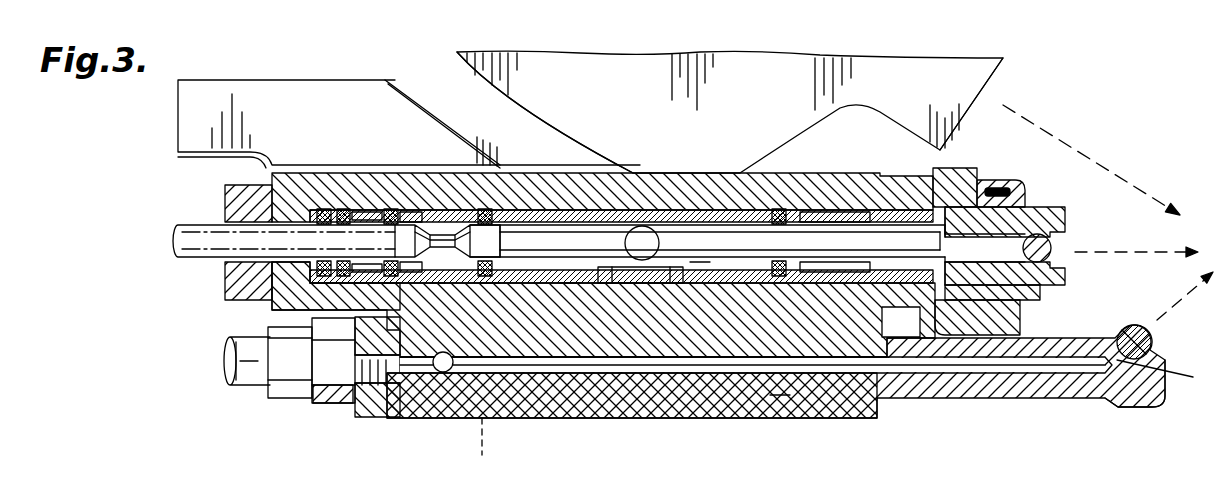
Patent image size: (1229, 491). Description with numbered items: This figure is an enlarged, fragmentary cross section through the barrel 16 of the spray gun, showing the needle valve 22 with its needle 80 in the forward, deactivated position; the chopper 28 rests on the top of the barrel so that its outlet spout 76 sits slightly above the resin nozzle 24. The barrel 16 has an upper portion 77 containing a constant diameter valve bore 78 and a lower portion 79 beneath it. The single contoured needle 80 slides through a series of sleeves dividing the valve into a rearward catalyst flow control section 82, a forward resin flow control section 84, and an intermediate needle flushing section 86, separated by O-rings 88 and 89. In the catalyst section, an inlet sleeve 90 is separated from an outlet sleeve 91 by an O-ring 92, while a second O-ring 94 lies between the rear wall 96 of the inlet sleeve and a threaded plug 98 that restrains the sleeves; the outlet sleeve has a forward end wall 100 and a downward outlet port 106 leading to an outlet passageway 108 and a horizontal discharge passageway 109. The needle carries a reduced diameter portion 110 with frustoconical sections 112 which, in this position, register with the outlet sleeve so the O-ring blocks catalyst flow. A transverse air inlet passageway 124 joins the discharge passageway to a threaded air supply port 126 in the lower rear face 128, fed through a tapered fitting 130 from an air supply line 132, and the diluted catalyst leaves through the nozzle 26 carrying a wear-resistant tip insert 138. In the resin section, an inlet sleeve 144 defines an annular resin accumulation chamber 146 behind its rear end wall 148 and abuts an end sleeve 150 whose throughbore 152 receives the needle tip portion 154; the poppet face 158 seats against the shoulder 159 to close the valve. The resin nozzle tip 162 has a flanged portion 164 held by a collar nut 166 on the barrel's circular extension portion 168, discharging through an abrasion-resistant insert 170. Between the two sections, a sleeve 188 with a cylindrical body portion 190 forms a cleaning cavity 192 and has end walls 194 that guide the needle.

The barrel 16 is at (500, 170).
The needle valve 22 is at (205, 209).
The resin nozzle 24 is at (1056, 208).
The catalyst nozzle 26 is at (1131, 418).
The chopper 28 is at (525, 103).
The outlet spout 76 is at (970, 110).
The upper portion of barrel 77 is at (462, 187).
The valve bore 78 is at (638, 290).
The lower portion of barrel 79 is at (703, 418).
The needle 80 is at (175, 240).
The catalyst flow control section 82 is at (340, 286).
The resin flow control section 84 is at (603, 309).
The needle flushing section 86 is at (628, 270).
The O-ring 88 is at (512, 233).
The O-ring 89 is at (790, 208).
The inlet sleeve 90 is at (382, 222).
The outlet sleeve 91 is at (422, 222).
The O-ring 92 is at (393, 208).
The second O-ring 94 is at (322, 208).
The rear wall of inlet sleeve 96 is at (343, 208).
The threaded plug 98 is at (230, 187).
The forward end wall 100 is at (487, 213).
The outlet port 106 is at (437, 285).
The outlet passageway 108 is at (488, 449).
The discharge passageway 109 is at (744, 400).
The reduced diameter portion 110 is at (490, 283).
The frustoconical sections 112 is at (425, 245).
The air inlet passageway 124 is at (443, 372).
The air supply port 126 is at (403, 413).
The lower rear face 128 is at (345, 405).
The tapered fitting 130 is at (267, 400).
The air supply line 132 is at (230, 357).
The tip insert 138 is at (1153, 336).
The inlet sleeve 144 is at (890, 213).
The resin accumulation chamber 146 is at (870, 230).
The rear end wall 148 is at (833, 232).
The end sleeve 150 is at (1003, 190).
The throughbore 152 is at (1040, 290).
The tip portion 154 is at (1027, 322).
The poppet face 158 is at (935, 262).
The shoulder 159 is at (953, 242).
The tip 162 is at (1070, 219).
The flanged portion 164 is at (1030, 200).
The collar nut 166 is at (972, 205).
The circular extension portion 168 is at (947, 193).
The insert 170 is at (1067, 255).
The sleeve 188 is at (650, 210).
The cylindrical body portion 190 is at (676, 210).
The cleaning cavity 192 is at (700, 270).
The end walls 194 is at (568, 285).